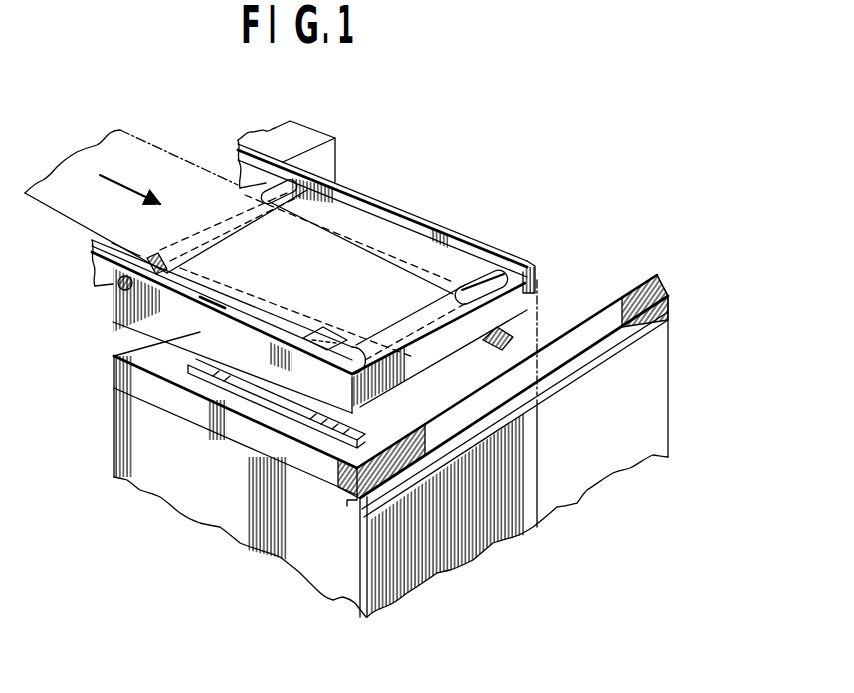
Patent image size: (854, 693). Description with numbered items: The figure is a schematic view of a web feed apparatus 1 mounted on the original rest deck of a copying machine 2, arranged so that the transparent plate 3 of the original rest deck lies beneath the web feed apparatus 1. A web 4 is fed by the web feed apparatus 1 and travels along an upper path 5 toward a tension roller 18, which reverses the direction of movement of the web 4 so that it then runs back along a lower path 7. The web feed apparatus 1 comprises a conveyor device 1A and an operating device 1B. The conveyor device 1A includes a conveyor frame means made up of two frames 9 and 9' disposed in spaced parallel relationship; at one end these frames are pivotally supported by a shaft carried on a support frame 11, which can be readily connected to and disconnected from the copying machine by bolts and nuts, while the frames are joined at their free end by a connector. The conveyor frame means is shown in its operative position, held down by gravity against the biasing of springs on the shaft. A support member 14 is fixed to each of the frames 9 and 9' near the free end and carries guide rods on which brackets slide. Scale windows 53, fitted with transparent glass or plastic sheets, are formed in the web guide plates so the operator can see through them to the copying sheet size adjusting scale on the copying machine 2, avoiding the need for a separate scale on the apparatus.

The web feed apparatus 1 is at (408, 193).
The conveyor device 1A is at (360, 190).
The operating device 1B is at (313, 132).
The copying machine 2 is at (122, 438).
The transparent plate 3 is at (480, 344).
The web 4 is at (148, 152).
The upper path 5 is at (157, 190).
The lower path 7 is at (106, 240).
The frame 9 is at (372, 190).
The frame 9' is at (216, 281).
The support frame 11 is at (117, 285).
The support member 14 is at (199, 364).
The tension roller 18 is at (505, 268).
The scale window 53 is at (323, 328).